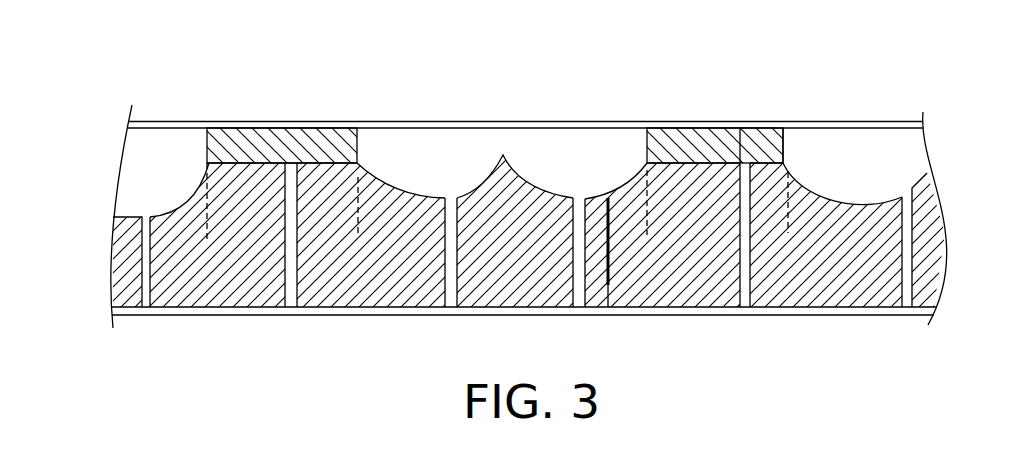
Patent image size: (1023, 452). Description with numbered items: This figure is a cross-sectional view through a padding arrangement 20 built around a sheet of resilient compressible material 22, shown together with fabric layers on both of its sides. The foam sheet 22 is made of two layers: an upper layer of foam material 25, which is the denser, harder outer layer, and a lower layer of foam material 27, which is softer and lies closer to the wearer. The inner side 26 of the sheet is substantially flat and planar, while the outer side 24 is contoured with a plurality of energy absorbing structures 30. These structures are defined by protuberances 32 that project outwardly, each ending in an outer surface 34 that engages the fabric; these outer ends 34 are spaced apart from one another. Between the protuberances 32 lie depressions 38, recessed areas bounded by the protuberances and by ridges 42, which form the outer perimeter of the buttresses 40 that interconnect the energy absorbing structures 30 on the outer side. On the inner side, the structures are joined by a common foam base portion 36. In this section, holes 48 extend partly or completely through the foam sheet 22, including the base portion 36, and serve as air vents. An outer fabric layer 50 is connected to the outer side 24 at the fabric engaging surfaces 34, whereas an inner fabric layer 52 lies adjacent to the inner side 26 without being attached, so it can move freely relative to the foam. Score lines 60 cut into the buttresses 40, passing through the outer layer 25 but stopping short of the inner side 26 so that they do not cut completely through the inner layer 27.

The padding arrangement 20 is at (902, 80).
The sheet of resilient compressible material 22 is at (942, 218).
The outer side 24 is at (760, 123).
The upper layer of foam material 25 is at (742, 148).
The inner side 26 is at (315, 315).
The lower layer of foam material 27 is at (697, 270).
The energy absorbing structures 30 is at (230, 197).
The protuberances 32 is at (347, 145).
The outer surface 34 is at (299, 120).
The base portion 36 is at (510, 275).
The depressions 38 is at (126, 210).
The buttresses 40 is at (197, 186).
The ridges 42 is at (507, 155).
The holes 48 is at (143, 272).
The outer fabric layer 50 is at (864, 128).
The inner fabric layer 52 is at (792, 315).
The score lines 60 is at (610, 258).